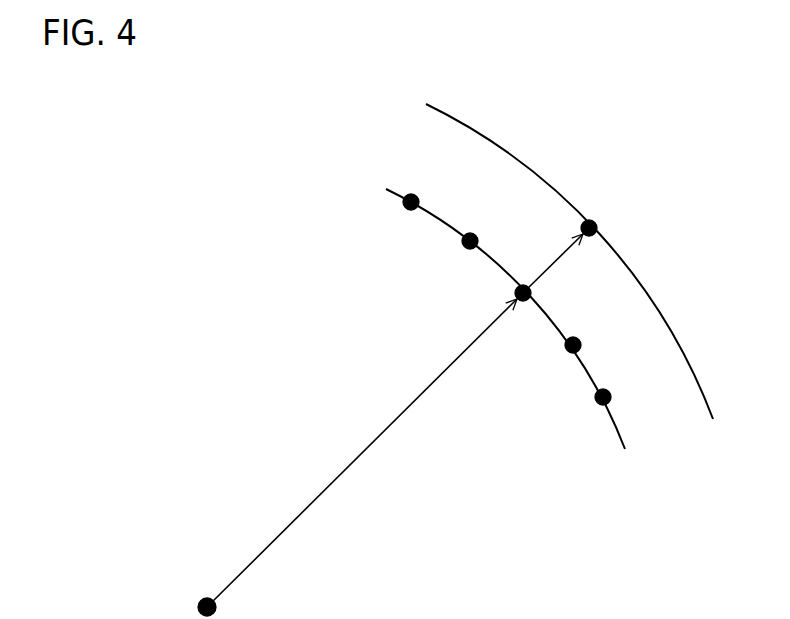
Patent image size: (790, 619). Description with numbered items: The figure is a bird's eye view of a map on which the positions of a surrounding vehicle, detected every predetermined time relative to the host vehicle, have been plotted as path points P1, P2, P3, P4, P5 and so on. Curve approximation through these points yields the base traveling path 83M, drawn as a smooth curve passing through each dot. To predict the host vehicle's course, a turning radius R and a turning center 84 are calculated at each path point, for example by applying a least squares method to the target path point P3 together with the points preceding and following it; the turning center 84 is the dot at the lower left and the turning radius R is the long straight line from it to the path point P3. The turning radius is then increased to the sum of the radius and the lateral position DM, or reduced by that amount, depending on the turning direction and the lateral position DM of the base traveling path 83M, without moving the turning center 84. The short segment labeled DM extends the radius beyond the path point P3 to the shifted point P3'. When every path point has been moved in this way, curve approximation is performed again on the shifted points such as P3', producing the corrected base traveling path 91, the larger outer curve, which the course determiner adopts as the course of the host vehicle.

The corrected base traveling path 91 is at (538, 169).
The base traveling path 83M is at (442, 223).
The turning center 84 is at (200, 598).
The turning radius R is at (380, 433).
The lateral position DM is at (550, 267).
The path point P1 is at (597, 407).
The path point P2 is at (570, 353).
The path point P3 is at (517, 262).
The corrected path point P3' is at (622, 205).
The path point P4 is at (468, 233).
The path point P5 is at (410, 194).